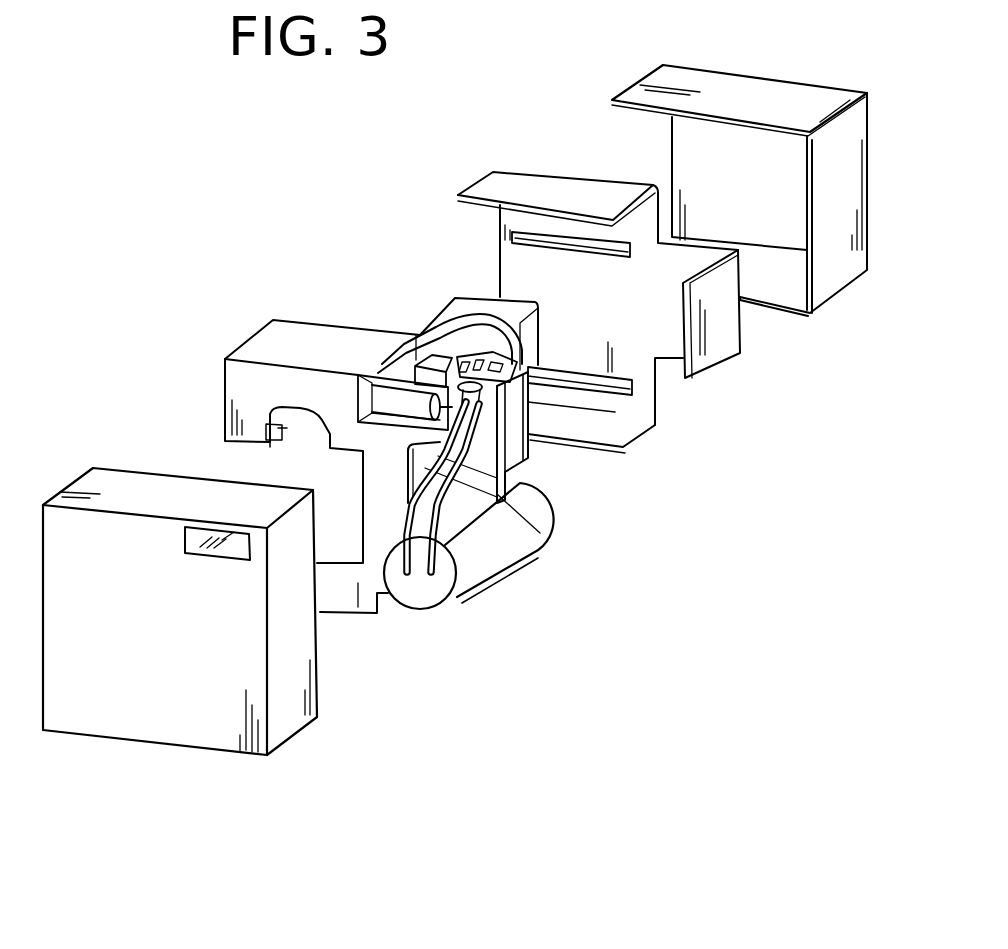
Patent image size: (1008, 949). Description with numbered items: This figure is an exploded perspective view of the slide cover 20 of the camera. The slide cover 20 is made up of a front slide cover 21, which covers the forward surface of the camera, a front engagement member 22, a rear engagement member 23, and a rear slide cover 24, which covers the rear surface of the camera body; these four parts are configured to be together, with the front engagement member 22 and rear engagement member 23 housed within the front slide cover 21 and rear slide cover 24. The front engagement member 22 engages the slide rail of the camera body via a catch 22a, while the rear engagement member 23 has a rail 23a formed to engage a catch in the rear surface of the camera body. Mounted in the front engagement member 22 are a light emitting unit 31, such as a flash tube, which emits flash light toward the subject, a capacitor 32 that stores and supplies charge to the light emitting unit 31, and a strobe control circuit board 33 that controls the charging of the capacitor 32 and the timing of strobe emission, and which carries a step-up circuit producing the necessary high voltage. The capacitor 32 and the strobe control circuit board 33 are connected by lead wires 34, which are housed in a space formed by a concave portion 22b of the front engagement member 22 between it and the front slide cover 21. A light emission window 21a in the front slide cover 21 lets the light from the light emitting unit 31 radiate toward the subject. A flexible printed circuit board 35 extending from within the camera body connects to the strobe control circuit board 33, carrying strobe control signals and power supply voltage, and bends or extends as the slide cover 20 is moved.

The slide cover 20 is at (439, 718).
The front slide cover 21 is at (297, 714).
The light emission window 21a is at (214, 545).
The front engagement member 22 is at (372, 597).
The catch 22a is at (290, 438).
The concave portion 22b is at (522, 500).
The rear engagement member 23 is at (718, 340).
The rail 23a is at (543, 252).
The rear slide cover 24 is at (853, 245).
The light emitting unit 31 is at (356, 372).
The capacitor 32 is at (522, 542).
The strobe control circuit board 33 is at (440, 325).
The lead wires 34 is at (477, 577).
The flexible printed circuit board 35 is at (524, 450).